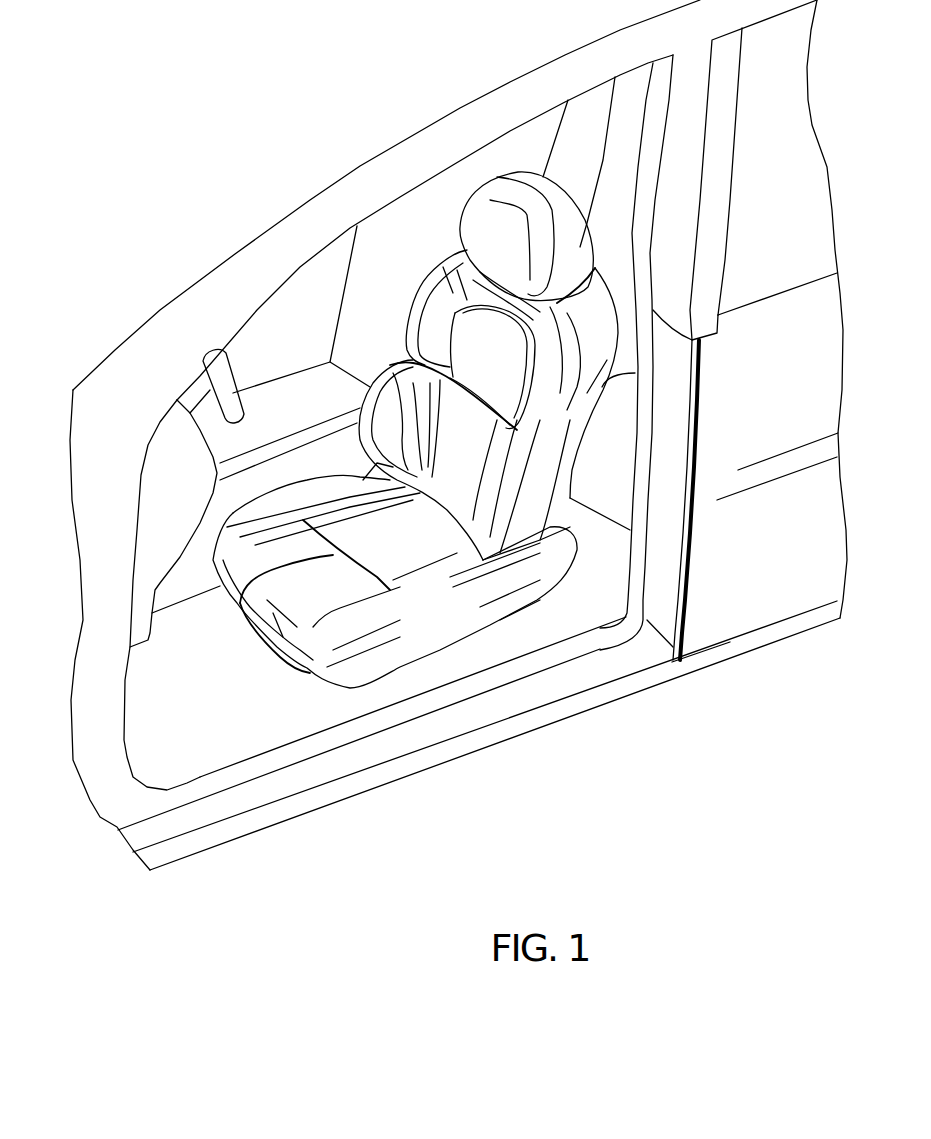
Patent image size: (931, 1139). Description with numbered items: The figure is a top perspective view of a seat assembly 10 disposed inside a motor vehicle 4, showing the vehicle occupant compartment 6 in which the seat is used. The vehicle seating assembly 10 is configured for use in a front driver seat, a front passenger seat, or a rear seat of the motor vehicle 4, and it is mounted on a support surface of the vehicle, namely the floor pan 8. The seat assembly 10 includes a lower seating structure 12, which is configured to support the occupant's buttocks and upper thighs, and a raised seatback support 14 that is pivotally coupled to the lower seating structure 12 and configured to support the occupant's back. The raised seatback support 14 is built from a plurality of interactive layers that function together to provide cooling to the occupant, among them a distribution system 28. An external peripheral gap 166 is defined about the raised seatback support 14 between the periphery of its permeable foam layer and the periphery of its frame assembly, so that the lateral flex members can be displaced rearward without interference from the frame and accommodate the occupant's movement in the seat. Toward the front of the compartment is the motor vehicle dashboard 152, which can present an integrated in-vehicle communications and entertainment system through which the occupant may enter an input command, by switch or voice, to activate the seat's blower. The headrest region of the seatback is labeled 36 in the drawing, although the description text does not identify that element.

The motor vehicle 4 is at (263, 132).
The vehicle occupant compartment 6 is at (148, 753).
The floor pan 8 is at (207, 747).
The seat assembly 10 is at (293, 711).
The lower seating structure 12 is at (417, 610).
The raised seatback support 14 is at (565, 380).
The distribution system 28 is at (380, 703).
The headrest 36 is at (484, 232).
The dashboard 152 is at (155, 507).
The external peripheral gap 166 is at (537, 480).